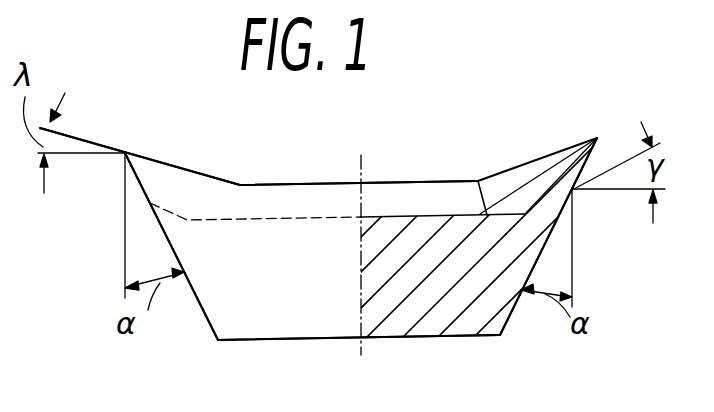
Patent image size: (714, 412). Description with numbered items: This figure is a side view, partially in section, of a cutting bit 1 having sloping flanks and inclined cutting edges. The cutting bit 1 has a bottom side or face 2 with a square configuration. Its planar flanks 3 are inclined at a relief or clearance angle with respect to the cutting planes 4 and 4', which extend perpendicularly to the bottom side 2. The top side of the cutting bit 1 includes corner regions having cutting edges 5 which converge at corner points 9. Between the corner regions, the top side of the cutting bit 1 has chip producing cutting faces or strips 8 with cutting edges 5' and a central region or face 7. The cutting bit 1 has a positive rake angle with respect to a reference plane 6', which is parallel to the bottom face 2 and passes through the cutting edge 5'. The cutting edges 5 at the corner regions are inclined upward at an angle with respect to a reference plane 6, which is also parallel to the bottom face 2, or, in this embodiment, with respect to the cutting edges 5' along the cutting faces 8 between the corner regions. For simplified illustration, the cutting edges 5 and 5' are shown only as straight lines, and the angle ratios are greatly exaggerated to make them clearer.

The cutting bit 1 is at (424, 160).
The bottom side 2 is at (260, 341).
The planar flanks 3 is at (200, 310).
The cutting plane 4 is at (94, 225).
The cutting plane 4' is at (616, 248).
The cutting edges 5 is at (142, 144).
The cutting edges 5' is at (314, 174).
The reference plane 6 is at (81, 203).
The reference plane 6' is at (618, 221).
The central region 7 is at (455, 214).
The chip producing cutting faces 8 is at (396, 198).
The corner points 9 is at (602, 126).